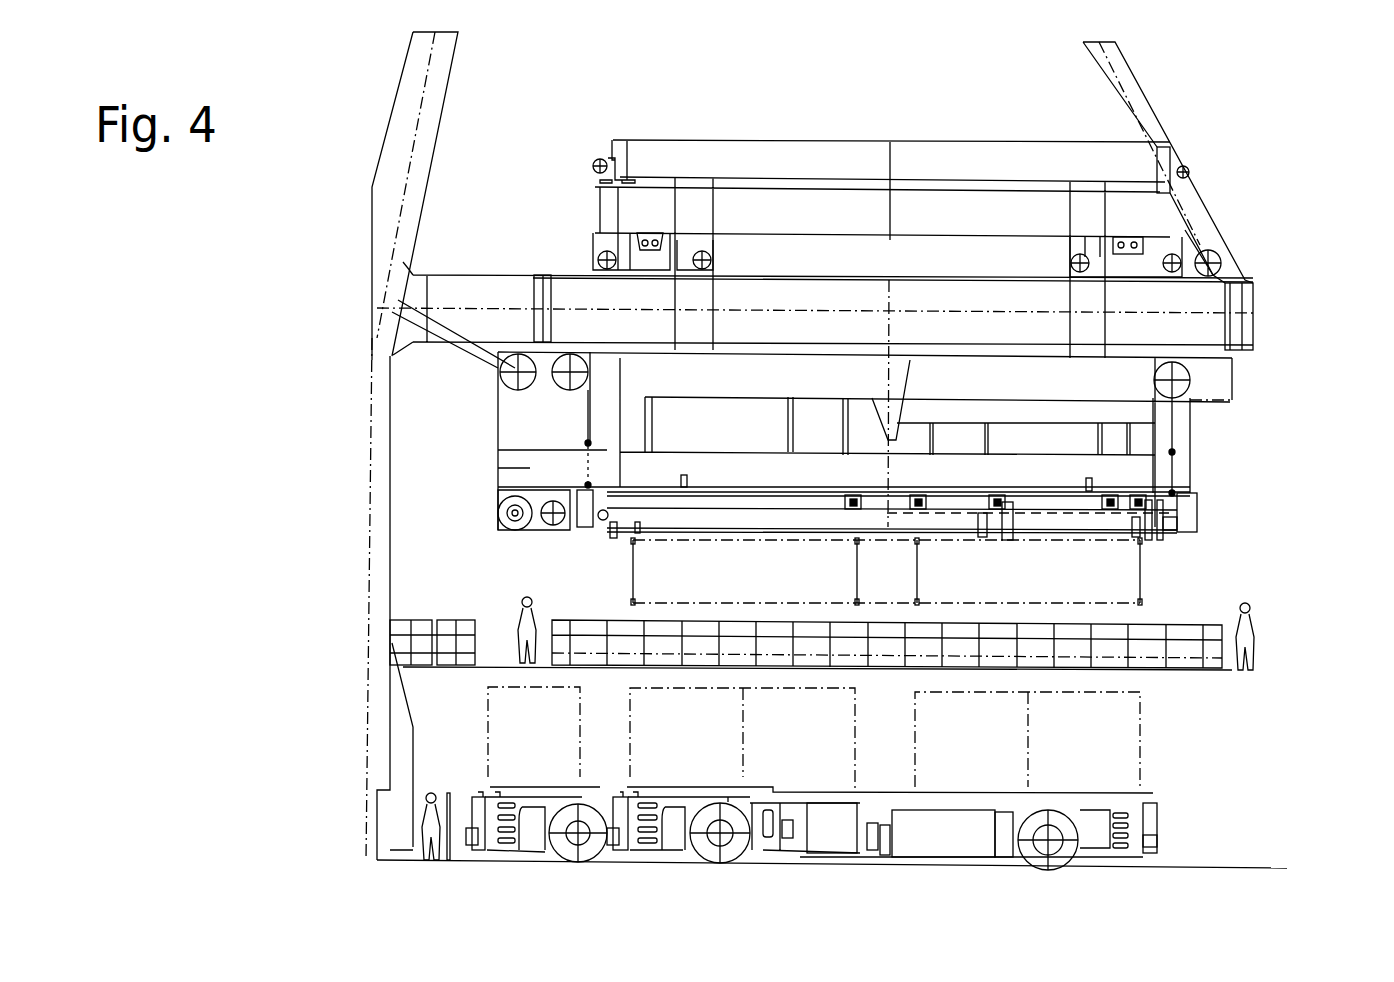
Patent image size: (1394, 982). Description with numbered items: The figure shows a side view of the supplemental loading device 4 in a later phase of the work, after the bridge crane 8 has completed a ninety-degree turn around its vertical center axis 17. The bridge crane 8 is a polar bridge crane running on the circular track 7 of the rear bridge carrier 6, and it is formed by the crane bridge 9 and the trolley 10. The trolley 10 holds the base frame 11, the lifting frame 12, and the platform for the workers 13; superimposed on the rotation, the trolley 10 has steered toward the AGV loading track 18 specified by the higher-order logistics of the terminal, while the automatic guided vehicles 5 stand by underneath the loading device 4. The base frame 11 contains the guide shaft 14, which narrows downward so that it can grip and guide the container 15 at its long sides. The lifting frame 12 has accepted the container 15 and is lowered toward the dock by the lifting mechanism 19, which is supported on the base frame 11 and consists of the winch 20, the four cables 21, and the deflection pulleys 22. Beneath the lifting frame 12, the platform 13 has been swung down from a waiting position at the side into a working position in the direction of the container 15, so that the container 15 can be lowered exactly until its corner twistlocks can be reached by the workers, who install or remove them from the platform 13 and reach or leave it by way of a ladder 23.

The supplemental loading device 4 is at (450, 558).
The automatic guided vehicles 5 is at (477, 817).
The rear bridge carrier 6 is at (1165, 330).
The circular track 7 is at (1245, 282).
The bridge crane 8 is at (575, 221).
The crane bridge 9 is at (1115, 218).
The trolley 10 is at (1040, 130).
The base frame 11 is at (1217, 380).
The lifting frame 12 is at (1192, 523).
The platform for the workers 13 is at (500, 662).
The guide shaft 14 is at (1100, 447).
The container 15 is at (1027, 583).
The vertical center axis 17 is at (895, 212).
The AGV loading track 18 is at (1172, 863).
The lifting mechanism 19 is at (462, 427).
The winch 20 is at (493, 520).
The cables 21 is at (497, 420).
The deflection pulleys 22 is at (423, 315).
The ladder 23 is at (390, 660).